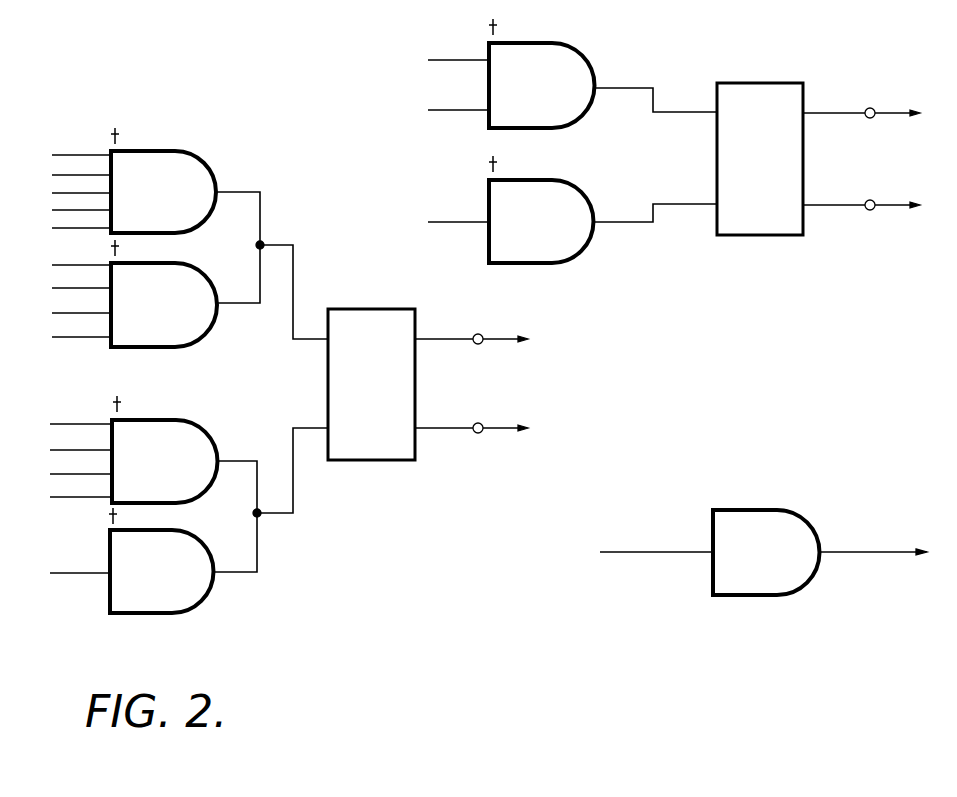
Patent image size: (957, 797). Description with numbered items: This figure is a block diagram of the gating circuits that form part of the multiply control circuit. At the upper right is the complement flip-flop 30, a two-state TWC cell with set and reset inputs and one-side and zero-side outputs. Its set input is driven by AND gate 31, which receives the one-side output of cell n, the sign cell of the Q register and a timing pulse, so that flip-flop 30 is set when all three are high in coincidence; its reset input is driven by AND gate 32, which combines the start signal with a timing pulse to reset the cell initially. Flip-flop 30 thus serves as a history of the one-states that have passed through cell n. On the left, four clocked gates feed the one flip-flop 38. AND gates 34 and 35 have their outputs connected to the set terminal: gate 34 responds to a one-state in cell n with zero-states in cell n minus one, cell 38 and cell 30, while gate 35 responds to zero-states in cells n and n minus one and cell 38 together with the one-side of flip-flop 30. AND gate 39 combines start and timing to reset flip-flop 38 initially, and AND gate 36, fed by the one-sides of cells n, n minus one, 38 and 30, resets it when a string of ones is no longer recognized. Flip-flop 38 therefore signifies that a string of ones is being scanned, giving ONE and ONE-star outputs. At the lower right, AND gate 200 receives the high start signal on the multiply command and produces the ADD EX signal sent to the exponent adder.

The complement flip-flop 30 is at (762, 84).
The AND gate 31 is at (591, 49).
The AND gate 32 is at (590, 185).
The AND gate 34 is at (213, 160).
The AND gate 35 is at (212, 274).
The AND gate 36 is at (212, 429).
The one flip-flop 38 is at (378, 310).
The AND gate 39 is at (209, 540).
The AND gate 200 is at (809, 514).